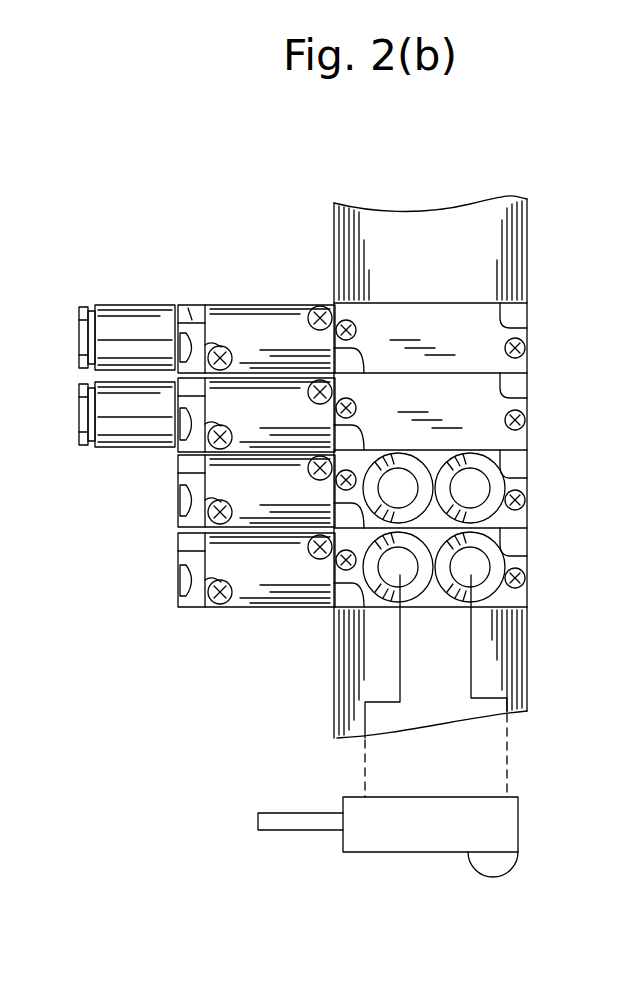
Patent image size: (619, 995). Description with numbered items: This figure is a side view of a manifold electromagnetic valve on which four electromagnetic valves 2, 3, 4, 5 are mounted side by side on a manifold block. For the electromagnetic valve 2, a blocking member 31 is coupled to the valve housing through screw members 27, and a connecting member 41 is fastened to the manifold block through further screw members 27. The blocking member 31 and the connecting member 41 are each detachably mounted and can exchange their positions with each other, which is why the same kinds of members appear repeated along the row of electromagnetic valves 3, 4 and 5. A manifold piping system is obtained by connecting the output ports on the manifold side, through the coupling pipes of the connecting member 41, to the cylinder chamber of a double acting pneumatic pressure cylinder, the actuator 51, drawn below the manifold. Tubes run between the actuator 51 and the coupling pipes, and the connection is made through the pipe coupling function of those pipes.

The electromagnetic valve 2 is at (178, 593).
The electromagnetic valve 3 is at (178, 518).
The electromagnetic valve 4 is at (258, 415).
The electromagnetic valve 5 is at (289, 320).
The screw members 27 is at (524, 347).
The blocking member 31 is at (473, 325).
The connecting member 41 is at (190, 318).
The actuator 51 is at (520, 845).